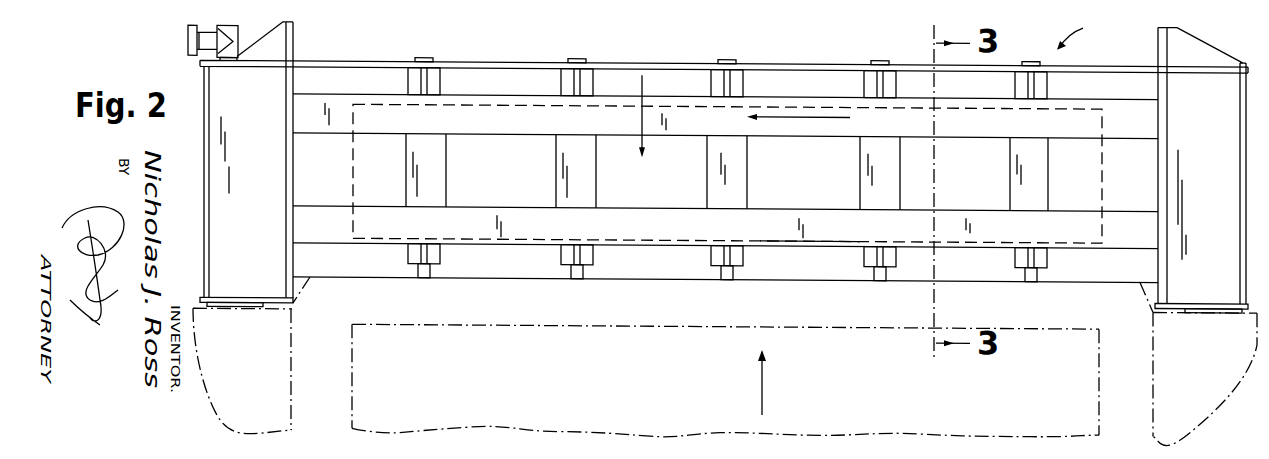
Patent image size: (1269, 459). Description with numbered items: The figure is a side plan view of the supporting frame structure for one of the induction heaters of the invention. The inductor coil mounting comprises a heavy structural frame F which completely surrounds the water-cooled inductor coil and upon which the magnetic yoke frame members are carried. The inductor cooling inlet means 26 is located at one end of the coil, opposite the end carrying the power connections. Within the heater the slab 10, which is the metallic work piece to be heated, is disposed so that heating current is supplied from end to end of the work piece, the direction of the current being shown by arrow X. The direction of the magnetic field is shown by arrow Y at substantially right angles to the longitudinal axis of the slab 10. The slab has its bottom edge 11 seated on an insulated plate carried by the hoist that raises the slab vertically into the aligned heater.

The slab 10 is at (770, 100).
The bottom edge 11 is at (810, 238).
The inductor cooling inlet means 26 is at (187, 40).
The arrow x X is at (820, 112).
The arrow y Y is at (642, 84).
The structural frame F is at (1076, 34).